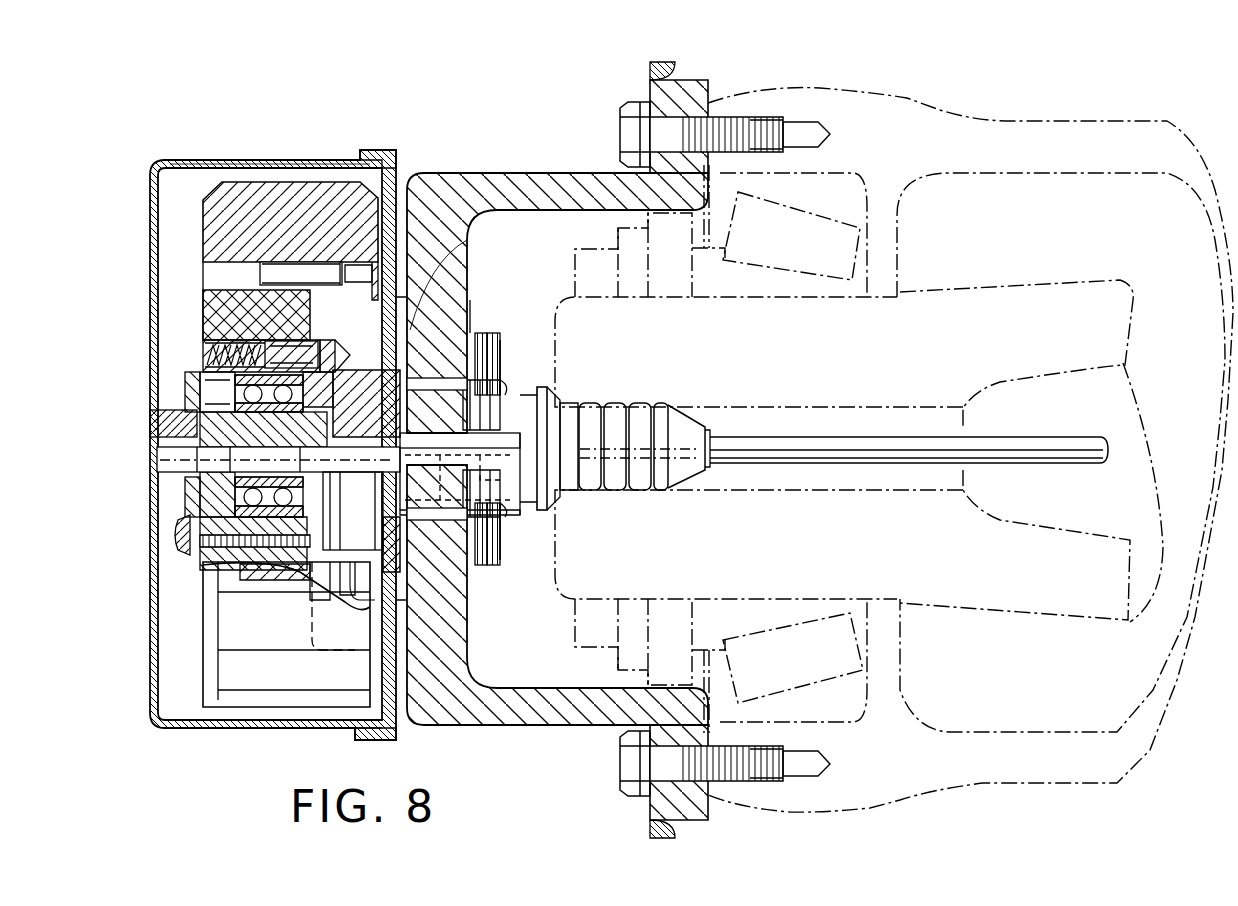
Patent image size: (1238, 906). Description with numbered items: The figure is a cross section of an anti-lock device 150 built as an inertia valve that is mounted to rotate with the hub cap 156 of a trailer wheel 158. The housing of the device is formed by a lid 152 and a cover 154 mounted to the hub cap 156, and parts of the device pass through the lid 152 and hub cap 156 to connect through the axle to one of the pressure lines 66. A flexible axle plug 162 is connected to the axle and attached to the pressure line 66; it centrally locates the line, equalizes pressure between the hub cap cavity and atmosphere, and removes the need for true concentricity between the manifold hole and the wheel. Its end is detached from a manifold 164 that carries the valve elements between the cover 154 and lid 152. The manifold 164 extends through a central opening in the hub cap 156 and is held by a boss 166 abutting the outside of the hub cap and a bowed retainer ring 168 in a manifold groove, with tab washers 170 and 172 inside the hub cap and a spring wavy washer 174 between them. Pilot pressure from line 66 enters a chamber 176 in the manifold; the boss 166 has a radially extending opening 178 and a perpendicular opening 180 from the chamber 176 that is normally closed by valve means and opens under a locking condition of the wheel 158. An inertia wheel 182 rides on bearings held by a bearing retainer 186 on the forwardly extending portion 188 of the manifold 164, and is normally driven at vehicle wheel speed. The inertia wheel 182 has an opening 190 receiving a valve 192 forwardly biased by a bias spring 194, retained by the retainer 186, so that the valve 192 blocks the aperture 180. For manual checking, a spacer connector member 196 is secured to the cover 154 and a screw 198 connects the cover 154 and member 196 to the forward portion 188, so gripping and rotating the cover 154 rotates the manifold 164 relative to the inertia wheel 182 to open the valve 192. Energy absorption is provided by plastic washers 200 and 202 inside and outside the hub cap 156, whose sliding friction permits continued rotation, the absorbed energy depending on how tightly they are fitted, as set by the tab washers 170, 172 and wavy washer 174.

The pressure line 66 is at (838, 437).
The anti-lock device 150 is at (186, 149).
The lid 152 is at (384, 150).
The cover 154 is at (228, 160).
The hub cap 156 is at (520, 173).
The wheel 158 is at (810, 95).
The axle plug 162 is at (568, 490).
The manifold 164 is at (545, 390).
The boss 166 is at (365, 335).
The bowed retainer ring 168 is at (507, 380).
The tab washer 170 is at (482, 333).
The tab washer 172 is at (503, 347).
The spring wavy washer 174 is at (493, 345).
The chamber 176 is at (345, 360).
The radially extending opening 178 is at (340, 340).
The perpendicular opening 180 is at (310, 360).
The inertia wheel 182 is at (290, 190).
The bearing retainer 186 is at (203, 328).
The forwardly extending portion 188 is at (212, 395).
The opening 190 is at (203, 363).
The valve 192 is at (277, 350).
The bias spring 194 is at (240, 342).
The spacer connector member 196 is at (165, 470).
The screw 198 is at (178, 440).
The plastic washer 200 is at (410, 330).
The plastic washer 202 is at (470, 333).